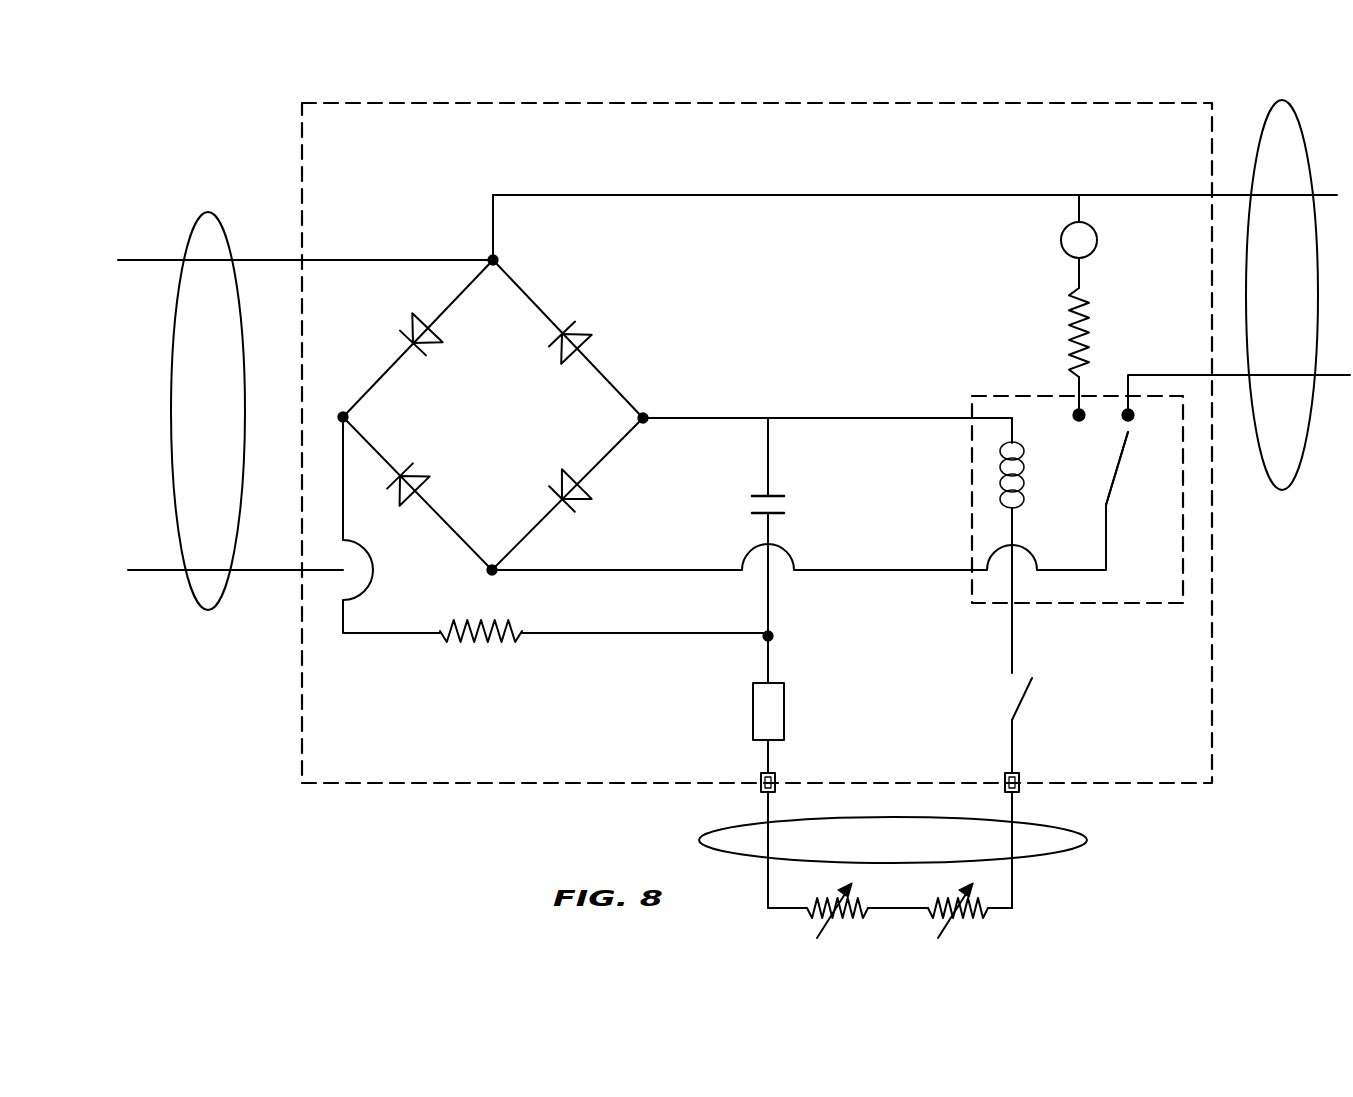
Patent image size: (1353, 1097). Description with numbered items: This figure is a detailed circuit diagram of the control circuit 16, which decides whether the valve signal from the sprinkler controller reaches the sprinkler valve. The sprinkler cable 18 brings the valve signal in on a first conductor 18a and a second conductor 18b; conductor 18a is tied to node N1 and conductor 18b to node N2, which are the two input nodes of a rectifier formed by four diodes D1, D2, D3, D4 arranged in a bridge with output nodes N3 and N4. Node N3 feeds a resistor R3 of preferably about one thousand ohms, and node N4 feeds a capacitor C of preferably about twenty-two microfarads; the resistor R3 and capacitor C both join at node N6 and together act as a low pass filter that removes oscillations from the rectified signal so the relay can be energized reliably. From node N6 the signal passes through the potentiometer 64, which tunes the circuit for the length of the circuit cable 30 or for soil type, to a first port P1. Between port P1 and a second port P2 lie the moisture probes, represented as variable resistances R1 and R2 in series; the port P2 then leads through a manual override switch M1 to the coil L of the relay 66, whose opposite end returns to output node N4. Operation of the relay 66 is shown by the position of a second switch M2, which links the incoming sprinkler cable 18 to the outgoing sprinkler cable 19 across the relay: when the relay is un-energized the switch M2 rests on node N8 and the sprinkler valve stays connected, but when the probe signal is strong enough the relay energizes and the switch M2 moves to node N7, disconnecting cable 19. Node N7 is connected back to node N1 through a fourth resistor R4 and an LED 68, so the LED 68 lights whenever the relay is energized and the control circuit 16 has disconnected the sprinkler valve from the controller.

The control circuit 16 is at (258, 99).
The sprinkler cable 18 is at (207, 214).
The first conductor 18a is at (195, 258).
The second conductor 18b is at (216, 576).
The sprinkler cable 19 is at (1285, 491).
The circuit cable 30 is at (699, 846).
The potentiometer 64 is at (790, 718).
The relay 66 is at (1046, 457).
The LED 68 is at (1061, 240).
The node N1 is at (514, 254).
The node N2 is at (521, 560).
The node N3 is at (333, 401).
The node N4 is at (660, 402).
The node N6 is at (789, 627).
The node N7 is at (1065, 431).
The node N8 is at (1147, 429).
The diode D1 is at (435, 350).
The diode D2 is at (560, 354).
The diode D3 is at (424, 478).
The diode D4 is at (563, 481).
The capacitor C is at (785, 527).
The coil L is at (1023, 463).
The manual override switch M1 is at (1039, 725).
The second switch M2 is at (1135, 468).
The variable resistance R1 is at (832, 908).
The variable resistance R2 is at (957, 908).
The resistor R3 is at (481, 651).
The fourth resistor R4 is at (1055, 336).
The first port P1 is at (761, 781).
The second port P2 is at (1005, 781).